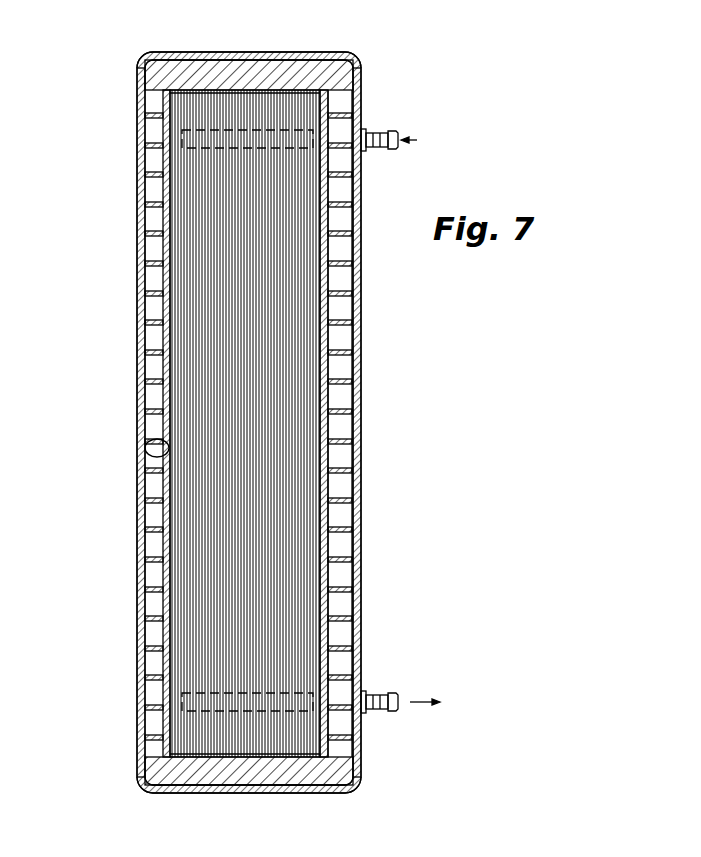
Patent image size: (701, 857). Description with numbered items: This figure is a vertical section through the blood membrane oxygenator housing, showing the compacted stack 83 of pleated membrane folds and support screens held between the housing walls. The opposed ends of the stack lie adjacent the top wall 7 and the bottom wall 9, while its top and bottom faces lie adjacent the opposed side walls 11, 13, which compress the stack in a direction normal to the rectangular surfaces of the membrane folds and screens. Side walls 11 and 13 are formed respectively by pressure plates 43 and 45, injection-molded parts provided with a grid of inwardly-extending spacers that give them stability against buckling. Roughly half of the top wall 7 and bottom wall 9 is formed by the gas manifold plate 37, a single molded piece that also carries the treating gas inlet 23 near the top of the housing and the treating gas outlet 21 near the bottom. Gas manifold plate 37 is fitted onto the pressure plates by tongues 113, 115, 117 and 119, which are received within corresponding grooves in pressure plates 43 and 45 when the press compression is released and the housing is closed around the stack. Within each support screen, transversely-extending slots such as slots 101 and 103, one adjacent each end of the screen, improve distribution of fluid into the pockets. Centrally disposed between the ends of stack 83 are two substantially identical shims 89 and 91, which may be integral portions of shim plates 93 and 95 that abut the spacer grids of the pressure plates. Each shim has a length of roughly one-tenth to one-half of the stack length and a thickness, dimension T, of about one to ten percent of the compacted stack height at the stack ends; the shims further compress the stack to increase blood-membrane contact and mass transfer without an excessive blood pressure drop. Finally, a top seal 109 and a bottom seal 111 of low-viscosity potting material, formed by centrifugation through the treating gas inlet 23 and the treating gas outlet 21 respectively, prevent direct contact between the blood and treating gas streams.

The top wall 7 is at (300, 52).
The bottom wall 9 is at (310, 793).
The side wall 11 is at (362, 362).
The side wall 13 is at (137, 357).
The treating gas outlet 21 is at (390, 712).
The treating gas inlet 23 is at (392, 128).
The gas manifold plate 37 is at (275, 53).
The pressure plate 43 is at (362, 300).
The pressure plate 45 is at (140, 463).
The compacted stack 83 is at (293, 547).
The shim 89 is at (362, 458).
The shim 91 is at (146, 450).
The shim plate 93 is at (362, 603).
The shim plate 95 is at (137, 218).
The slot 101 is at (162, 155).
The slot 103 is at (165, 694).
The top seal 109 is at (213, 53).
The bottom seal 111 is at (245, 793).
The tongue 113 is at (137, 88).
The tongue 115 is at (362, 82).
The tongue 117 is at (138, 762).
The tongue 119 is at (368, 755).
The shim thickness T is at (188, 423).